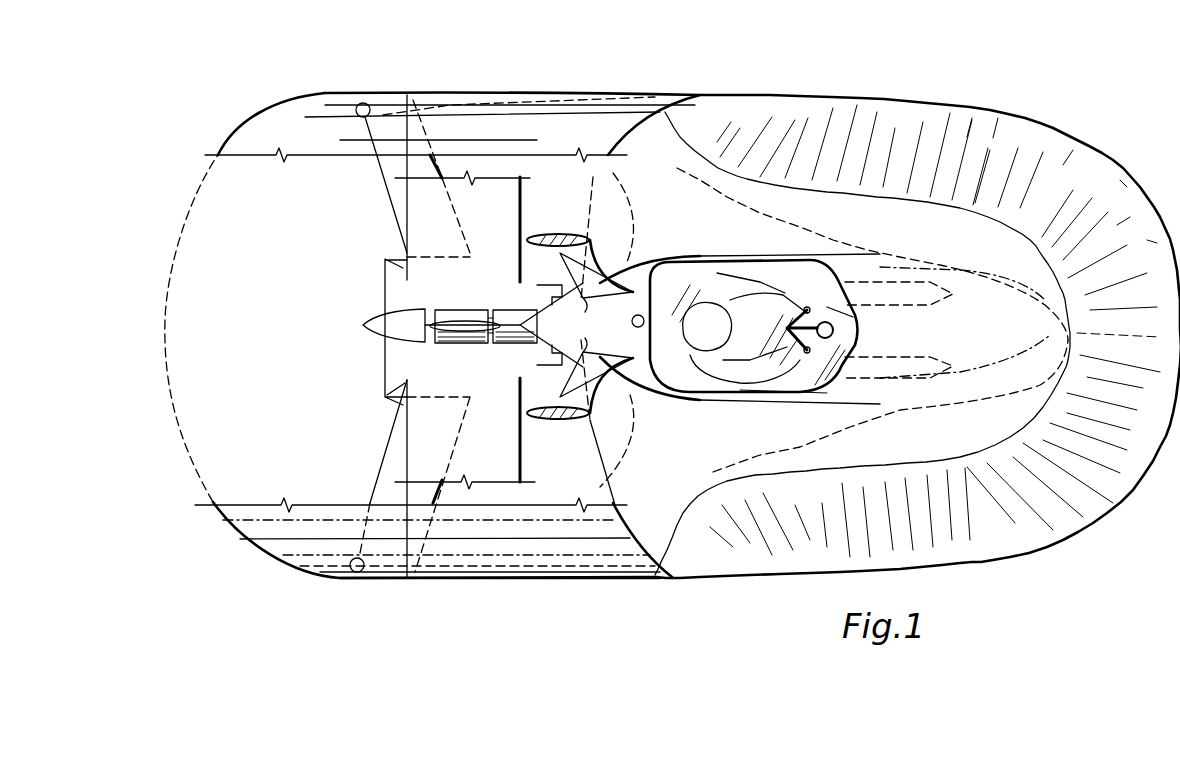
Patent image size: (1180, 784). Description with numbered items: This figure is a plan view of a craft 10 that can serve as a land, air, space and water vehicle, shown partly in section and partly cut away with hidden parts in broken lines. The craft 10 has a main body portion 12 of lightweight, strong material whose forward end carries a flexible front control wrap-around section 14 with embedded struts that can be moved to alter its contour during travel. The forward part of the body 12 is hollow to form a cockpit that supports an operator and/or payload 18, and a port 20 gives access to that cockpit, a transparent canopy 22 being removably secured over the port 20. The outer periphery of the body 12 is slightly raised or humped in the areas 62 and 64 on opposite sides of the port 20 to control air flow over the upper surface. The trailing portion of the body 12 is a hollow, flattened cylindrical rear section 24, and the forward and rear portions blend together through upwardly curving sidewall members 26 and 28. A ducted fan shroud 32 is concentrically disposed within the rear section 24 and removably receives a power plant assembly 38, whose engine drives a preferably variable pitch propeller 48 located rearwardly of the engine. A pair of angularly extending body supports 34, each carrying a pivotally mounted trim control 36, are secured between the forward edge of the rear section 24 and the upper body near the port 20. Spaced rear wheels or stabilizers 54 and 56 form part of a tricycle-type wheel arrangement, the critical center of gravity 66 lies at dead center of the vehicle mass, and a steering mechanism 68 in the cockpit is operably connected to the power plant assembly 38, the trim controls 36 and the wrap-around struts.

The craft 10 is at (164, 272).
The main body portion 12 is at (1000, 250).
The front control wrap-around section 14 is at (1140, 473).
The operator and/or payload 18 is at (697, 332).
The port 20 is at (657, 370).
The transparent canopy 22 is at (777, 270).
The rear section 24 is at (457, 535).
The sidewall member 26 is at (505, 92).
The sidewall member 28 is at (567, 583).
The ducted fan shroud 32 is at (416, 423).
The body supports 34 is at (543, 233).
The trim control 36 is at (597, 278).
The power plant assembly 38 is at (467, 346).
The propeller 48 is at (450, 322).
The rear wheel or stabilizer 54 is at (360, 574).
The rear wheel or stabilizer 56 is at (360, 103).
The humped area 62 is at (700, 216).
The humped area 64 is at (750, 440).
The critical center of gravity 66 is at (631, 321).
The steering mechanism 68 is at (834, 328).